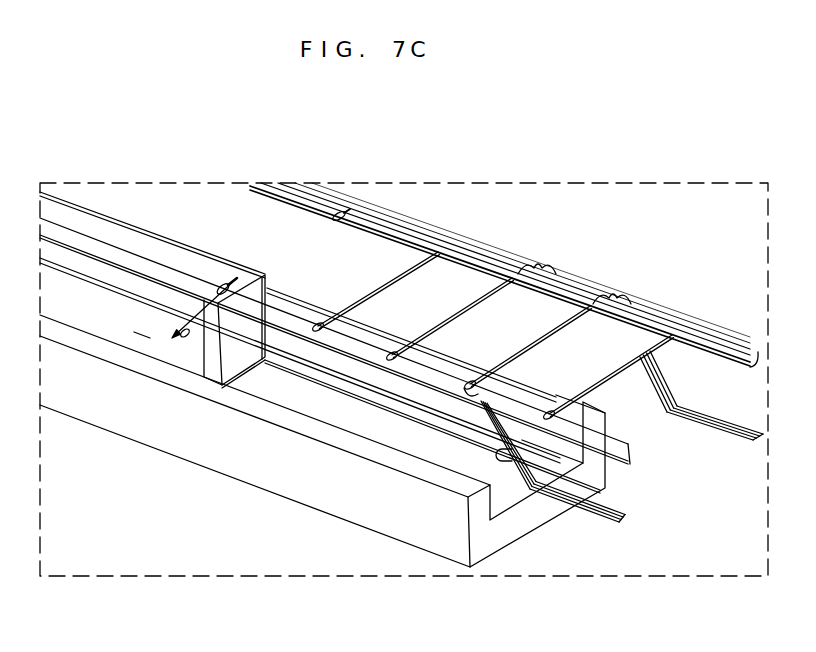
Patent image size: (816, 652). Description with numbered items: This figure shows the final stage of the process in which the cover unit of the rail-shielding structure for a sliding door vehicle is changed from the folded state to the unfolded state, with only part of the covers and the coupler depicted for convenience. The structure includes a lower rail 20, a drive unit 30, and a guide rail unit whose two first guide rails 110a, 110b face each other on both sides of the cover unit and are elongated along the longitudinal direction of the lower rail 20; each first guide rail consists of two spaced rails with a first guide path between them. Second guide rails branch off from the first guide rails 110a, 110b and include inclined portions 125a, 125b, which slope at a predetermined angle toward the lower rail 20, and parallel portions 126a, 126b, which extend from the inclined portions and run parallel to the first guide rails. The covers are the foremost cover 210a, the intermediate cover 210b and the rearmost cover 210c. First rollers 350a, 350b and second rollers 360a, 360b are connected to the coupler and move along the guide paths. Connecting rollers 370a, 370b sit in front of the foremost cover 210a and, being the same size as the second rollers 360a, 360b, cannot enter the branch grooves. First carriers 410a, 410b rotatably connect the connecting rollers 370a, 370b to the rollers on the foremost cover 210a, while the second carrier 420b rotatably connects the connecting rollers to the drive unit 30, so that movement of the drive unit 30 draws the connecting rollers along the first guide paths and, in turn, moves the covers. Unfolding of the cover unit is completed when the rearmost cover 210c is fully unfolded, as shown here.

The lower rail 20 is at (273, 486).
The drive unit 30 is at (134, 332).
The first guide rail 110a is at (372, 196).
The first guide rail 110b is at (97, 235).
The inclined portion 125a is at (667, 372).
The inclined portion 125b is at (518, 465).
The parallel portion 126a is at (712, 438).
The parallel portion 126b is at (640, 522).
The foremost cover 210a is at (463, 273).
The intermediate cover 210b is at (557, 298).
The rearmost cover 210c is at (632, 330).
The first roller 350a is at (547, 255).
The first roller 350b is at (376, 352).
The second roller 360a is at (619, 285).
The second roller 360b is at (467, 397).
The connecting roller 370a is at (335, 212).
The connecting roller 370b is at (220, 284).
The first carrier 410a is at (403, 238).
The first carrier 410b is at (300, 299).
The second carrier 420b is at (207, 310).